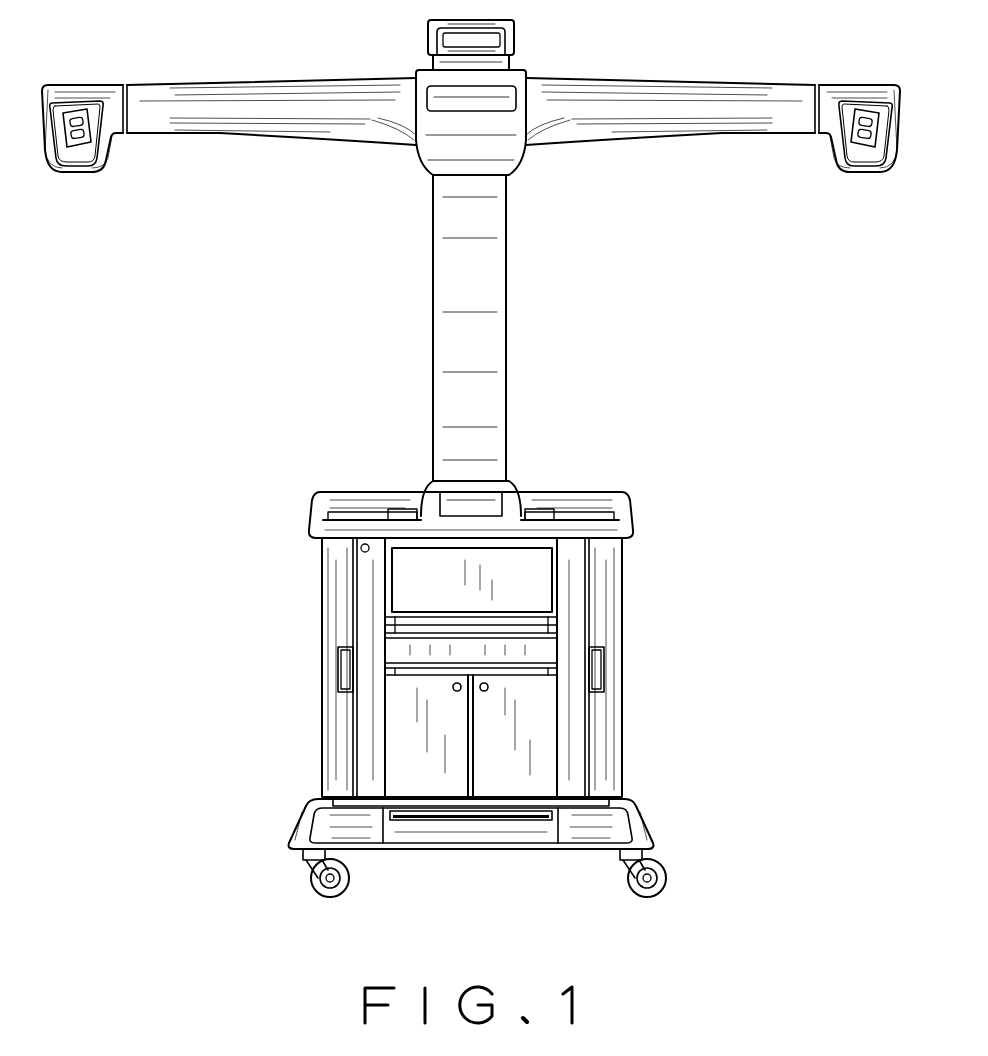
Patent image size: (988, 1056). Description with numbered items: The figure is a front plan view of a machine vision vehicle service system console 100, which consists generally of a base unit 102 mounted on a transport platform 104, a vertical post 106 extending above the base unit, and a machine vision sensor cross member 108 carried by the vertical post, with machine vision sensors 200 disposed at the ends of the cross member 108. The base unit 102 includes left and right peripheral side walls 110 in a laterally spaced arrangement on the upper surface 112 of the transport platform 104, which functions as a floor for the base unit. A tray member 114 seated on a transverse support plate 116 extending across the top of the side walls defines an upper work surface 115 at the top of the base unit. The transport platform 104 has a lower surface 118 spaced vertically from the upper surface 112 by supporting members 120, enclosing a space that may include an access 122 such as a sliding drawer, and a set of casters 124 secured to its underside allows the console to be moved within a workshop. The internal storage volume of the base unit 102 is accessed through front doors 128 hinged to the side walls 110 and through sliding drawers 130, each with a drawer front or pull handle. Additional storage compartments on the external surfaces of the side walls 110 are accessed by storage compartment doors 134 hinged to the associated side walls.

The machine vision vehicle service system console 100 is at (636, 397).
The base unit 102 is at (648, 508).
The transport platform 104 is at (292, 811).
The vertical post 106 is at (428, 340).
The machine vision sensor cross member 108 is at (340, 153).
The peripheral side walls 110 is at (349, 603).
The upper surface 112 is at (523, 790).
The tray member 114 is at (393, 480).
The upper work surface 115 is at (565, 515).
The transverse support plate 116 is at (300, 541).
The lower surface 118 is at (583, 850).
The supporting members 120 is at (292, 833).
The access 122 is at (476, 835).
The casters 124 is at (310, 878).
The front doors 128 is at (406, 730).
The sliding drawers 130 is at (515, 578).
The storage compartment doors 134 is at (324, 658).
The machine vision sensors 200 is at (77, 107).